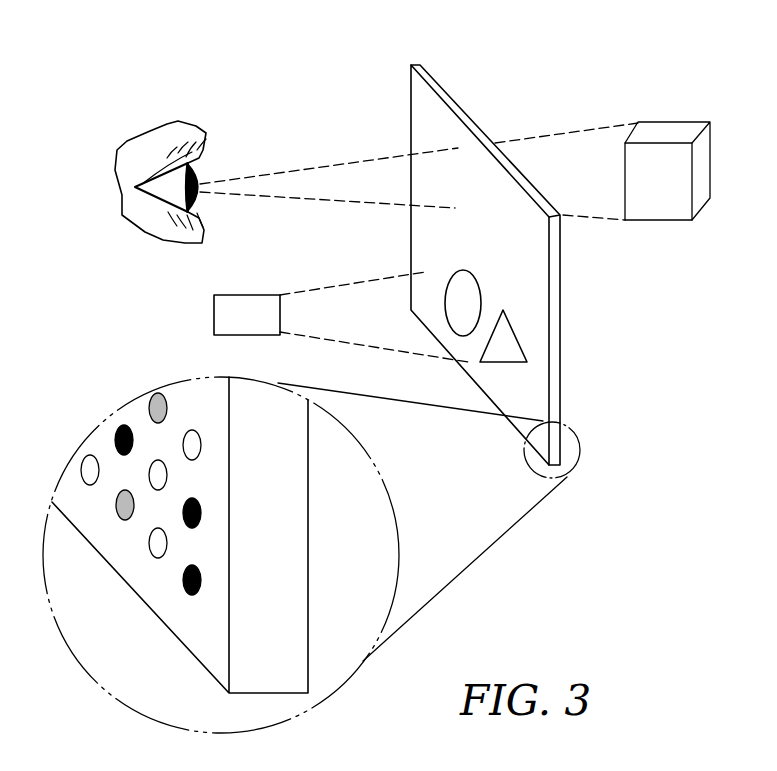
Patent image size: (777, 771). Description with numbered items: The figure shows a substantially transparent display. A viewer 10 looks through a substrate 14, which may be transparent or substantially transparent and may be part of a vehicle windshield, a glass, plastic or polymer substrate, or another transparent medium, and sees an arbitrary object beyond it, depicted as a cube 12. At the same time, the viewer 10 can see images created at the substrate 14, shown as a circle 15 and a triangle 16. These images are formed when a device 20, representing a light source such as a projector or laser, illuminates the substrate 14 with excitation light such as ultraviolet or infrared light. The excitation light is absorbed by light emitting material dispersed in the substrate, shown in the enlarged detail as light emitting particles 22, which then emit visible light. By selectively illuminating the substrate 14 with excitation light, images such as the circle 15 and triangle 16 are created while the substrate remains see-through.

The viewer 10 is at (199, 177).
The cube 12 is at (670, 130).
The substrate 14 is at (453, 106).
The circle 15 is at (450, 298).
The triangle 16 is at (493, 343).
The device 20 is at (247, 294).
The light emitting particles 22 is at (153, 407).